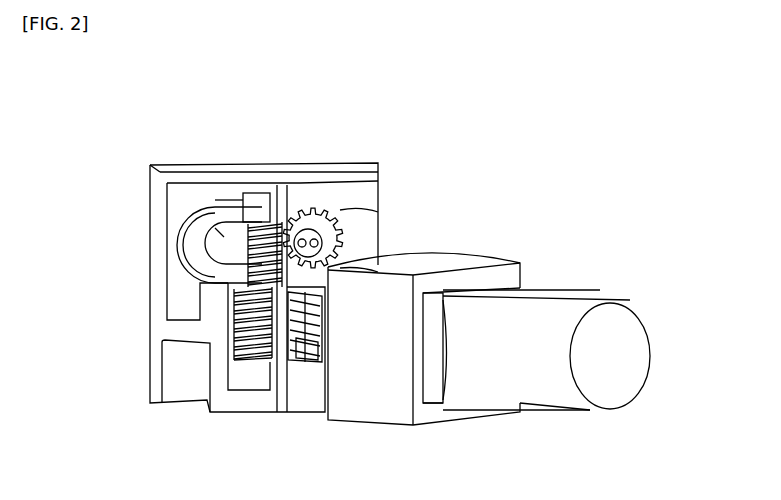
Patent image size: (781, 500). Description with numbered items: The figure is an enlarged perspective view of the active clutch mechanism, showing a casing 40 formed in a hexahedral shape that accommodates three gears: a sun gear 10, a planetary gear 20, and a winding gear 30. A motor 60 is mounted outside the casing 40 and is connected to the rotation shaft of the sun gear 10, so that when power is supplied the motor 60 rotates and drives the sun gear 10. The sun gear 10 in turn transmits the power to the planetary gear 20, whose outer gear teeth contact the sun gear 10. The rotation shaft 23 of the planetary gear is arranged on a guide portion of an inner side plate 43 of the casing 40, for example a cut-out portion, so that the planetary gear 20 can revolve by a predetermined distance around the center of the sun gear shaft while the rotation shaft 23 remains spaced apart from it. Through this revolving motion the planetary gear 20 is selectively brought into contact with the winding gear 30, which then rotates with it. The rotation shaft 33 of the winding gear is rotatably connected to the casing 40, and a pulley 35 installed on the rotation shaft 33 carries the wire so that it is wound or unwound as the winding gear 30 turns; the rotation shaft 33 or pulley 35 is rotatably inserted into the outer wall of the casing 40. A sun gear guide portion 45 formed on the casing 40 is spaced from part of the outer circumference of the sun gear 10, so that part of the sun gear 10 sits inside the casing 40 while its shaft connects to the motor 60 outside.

The sun gear 10 is at (312, 380).
The planetary gear 20 is at (245, 357).
The rotation shaft of the planetary gear 23 is at (278, 412).
The winding gear 30 is at (333, 208).
The rotation shaft of the winding gear 33 is at (337, 236).
The pulley 35 is at (222, 236).
The casing 40 is at (337, 168).
The inner side plate 43 is at (215, 368).
The sun gear guide portion 45 is at (308, 352).
The motor 60 is at (551, 266).